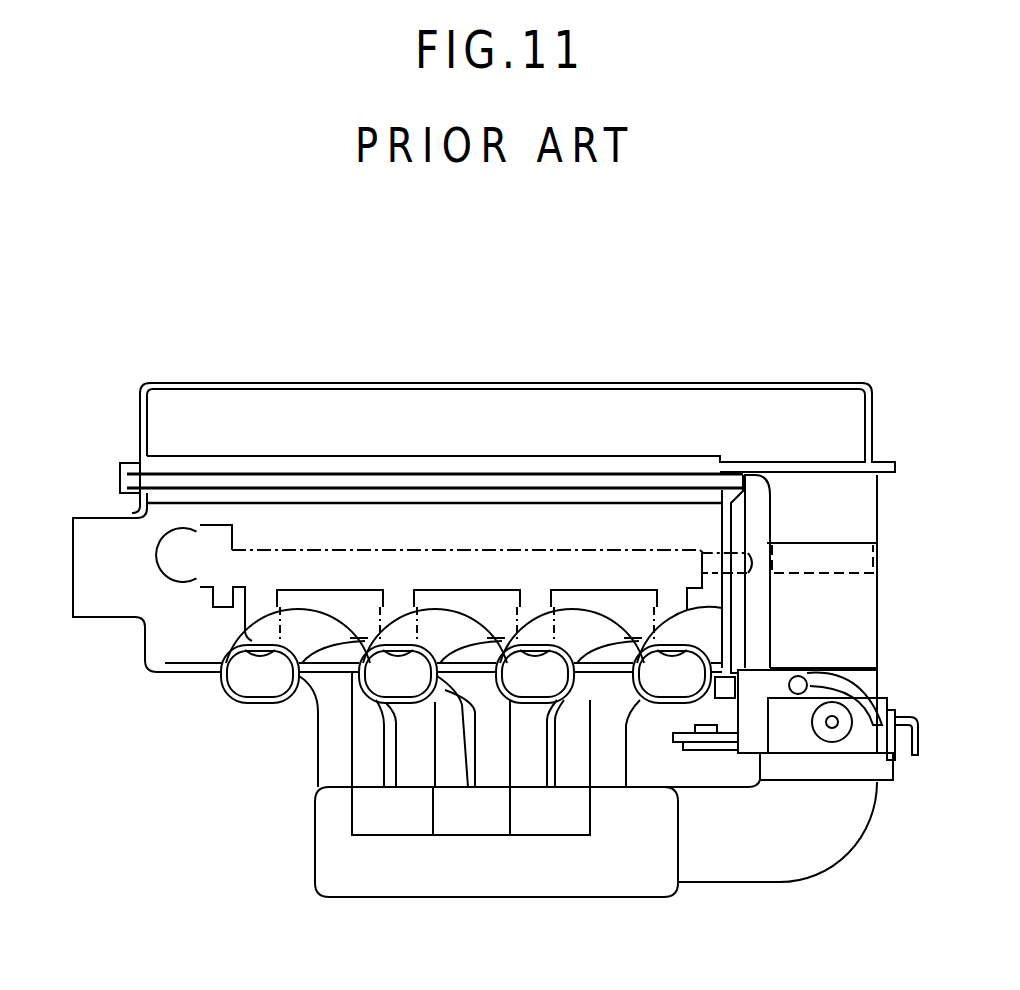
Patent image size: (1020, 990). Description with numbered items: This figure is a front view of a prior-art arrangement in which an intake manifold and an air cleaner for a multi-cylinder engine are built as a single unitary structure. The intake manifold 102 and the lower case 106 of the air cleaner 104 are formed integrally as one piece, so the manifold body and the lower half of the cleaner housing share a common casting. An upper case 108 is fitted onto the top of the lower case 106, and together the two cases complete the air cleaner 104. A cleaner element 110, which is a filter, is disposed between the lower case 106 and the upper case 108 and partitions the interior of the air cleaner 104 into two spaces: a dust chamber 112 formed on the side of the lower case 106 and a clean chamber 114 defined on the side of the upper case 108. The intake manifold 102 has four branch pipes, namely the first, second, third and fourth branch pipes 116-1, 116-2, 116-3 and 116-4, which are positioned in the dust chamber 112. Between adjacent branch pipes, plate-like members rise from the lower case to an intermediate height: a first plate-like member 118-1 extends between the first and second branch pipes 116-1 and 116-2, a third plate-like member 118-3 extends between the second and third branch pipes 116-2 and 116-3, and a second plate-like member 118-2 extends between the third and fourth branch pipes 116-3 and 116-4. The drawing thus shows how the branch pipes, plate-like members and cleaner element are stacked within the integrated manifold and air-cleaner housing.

The intake manifold 102 is at (310, 824).
The air cleaner 104 is at (742, 372).
The lower case 106 is at (132, 513).
The upper case 108 is at (520, 382).
The cleaner element 110 is at (709, 457).
The dust chamber 112 is at (550, 515).
The clean chamber 114 is at (215, 407).
The first branch pipe 116-1 is at (290, 645).
The second branch pipe 116-2 is at (432, 643).
The third branch pipe 116-3 is at (505, 643).
The fourth branch pipe 116-4 is at (643, 640).
The first plate-like member 118-1 is at (363, 640).
The second plate-like member 118-2 is at (468, 640).
The third plate-like member 118-3 is at (573, 637).